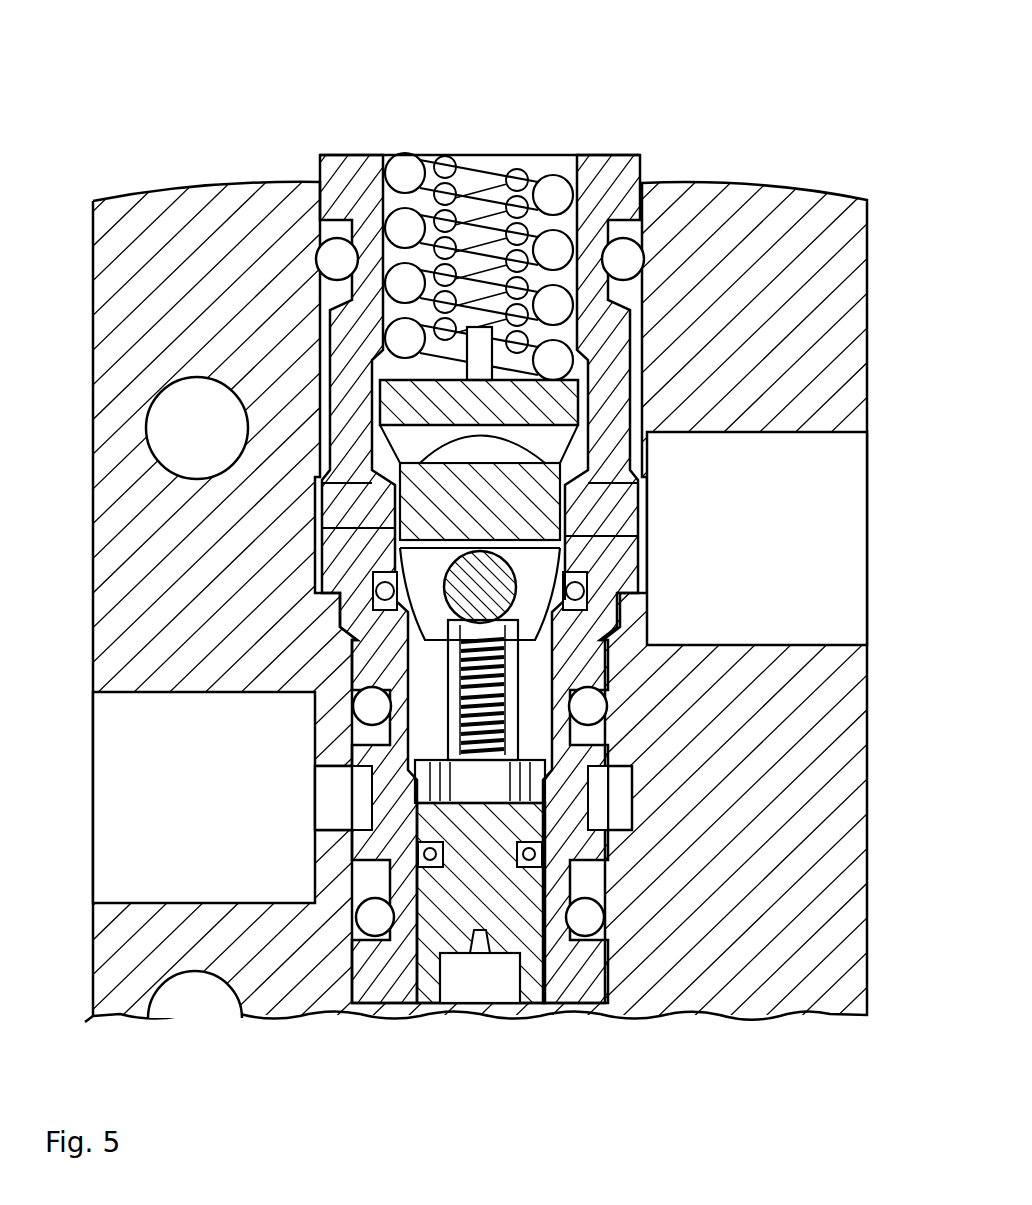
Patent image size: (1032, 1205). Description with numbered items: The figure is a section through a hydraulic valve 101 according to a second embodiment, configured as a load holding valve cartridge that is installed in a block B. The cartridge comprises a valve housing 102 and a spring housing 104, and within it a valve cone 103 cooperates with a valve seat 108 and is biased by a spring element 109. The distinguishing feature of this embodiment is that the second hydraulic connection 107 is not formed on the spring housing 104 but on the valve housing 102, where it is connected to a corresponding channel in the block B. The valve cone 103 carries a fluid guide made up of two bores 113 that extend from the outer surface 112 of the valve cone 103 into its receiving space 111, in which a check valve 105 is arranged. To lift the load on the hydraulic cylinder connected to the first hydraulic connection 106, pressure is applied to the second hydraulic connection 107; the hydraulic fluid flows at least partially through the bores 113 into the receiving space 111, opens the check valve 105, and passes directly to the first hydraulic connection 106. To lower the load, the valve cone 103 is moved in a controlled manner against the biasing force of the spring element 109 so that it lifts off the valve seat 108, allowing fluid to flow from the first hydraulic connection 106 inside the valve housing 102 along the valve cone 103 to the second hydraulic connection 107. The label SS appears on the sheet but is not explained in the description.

The hydraulic valve 101 is at (475, 602).
The valve housing 102 is at (558, 958).
The valve cone 103 is at (582, 472).
The spring housing 104 is at (597, 180).
The check valve 105 is at (495, 587).
The first hydraulic connection 106 is at (370, 773).
The second hydraulic connection 107 is at (598, 510).
The valve seat 108 is at (340, 655).
The spring element 109 is at (410, 175).
The receiving space 111 is at (456, 508).
The outer surface 112 is at (395, 483).
The bores 113 is at (390, 528).
The block B is at (740, 985).
The section plane SS is at (849, 140).